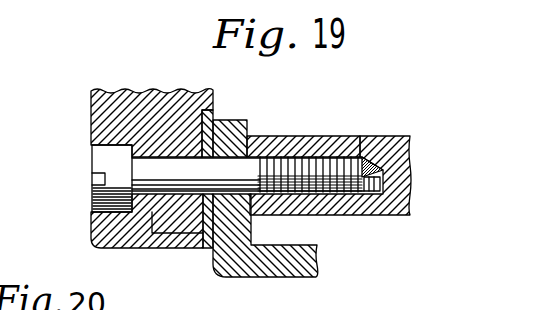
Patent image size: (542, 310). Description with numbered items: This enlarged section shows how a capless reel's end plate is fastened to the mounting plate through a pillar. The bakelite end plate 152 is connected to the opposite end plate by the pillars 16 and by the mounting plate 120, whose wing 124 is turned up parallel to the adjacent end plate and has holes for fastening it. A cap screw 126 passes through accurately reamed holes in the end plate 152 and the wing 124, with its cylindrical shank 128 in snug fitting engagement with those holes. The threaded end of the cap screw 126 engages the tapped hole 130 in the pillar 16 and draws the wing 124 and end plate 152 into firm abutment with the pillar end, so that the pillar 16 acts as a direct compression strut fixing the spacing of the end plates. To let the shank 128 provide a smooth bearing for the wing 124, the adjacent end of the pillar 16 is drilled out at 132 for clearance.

The pillar 16 is at (381, 138).
The mounting plate 120 is at (277, 270).
The wing 124 is at (228, 138).
The cap screw 126 is at (131, 190).
The cylindrical shank 128 is at (252, 176).
The tapped hole 130 is at (383, 174).
The drilled-out clearance 132 is at (278, 147).
The bakelite end plate 152 is at (112, 108).